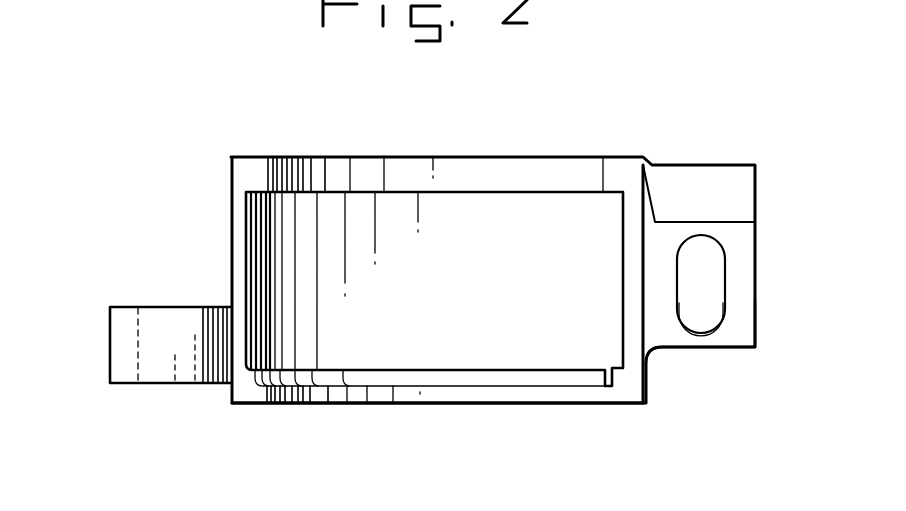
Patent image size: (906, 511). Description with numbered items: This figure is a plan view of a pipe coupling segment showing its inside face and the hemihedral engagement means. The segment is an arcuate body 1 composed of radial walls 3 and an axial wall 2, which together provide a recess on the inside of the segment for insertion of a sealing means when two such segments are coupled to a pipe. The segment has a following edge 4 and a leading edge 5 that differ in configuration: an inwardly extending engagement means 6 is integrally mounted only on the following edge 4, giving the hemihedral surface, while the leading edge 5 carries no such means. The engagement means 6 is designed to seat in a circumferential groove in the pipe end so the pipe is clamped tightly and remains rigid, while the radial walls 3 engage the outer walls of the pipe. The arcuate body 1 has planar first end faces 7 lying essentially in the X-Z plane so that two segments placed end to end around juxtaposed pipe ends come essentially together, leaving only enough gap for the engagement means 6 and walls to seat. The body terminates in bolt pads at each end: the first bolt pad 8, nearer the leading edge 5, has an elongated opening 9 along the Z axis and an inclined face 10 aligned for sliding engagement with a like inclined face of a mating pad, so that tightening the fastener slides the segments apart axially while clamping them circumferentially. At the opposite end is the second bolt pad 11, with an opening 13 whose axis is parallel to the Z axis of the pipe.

The arcuate body 1 is at (592, 125).
The axial wall 2 is at (422, 270).
The radial walls 3 is at (507, 170).
The following edge 4 is at (430, 420).
The leading edge 5 is at (319, 147).
The inwardly extending engagement means 6 is at (322, 395).
The first end faces 7 is at (252, 170).
The first bolt pad 8 is at (755, 203).
The elongated opening 9 is at (705, 268).
The inclined face 10 is at (728, 330).
The second bolt pad 11 is at (110, 337).
The opening 13 is at (169, 293).